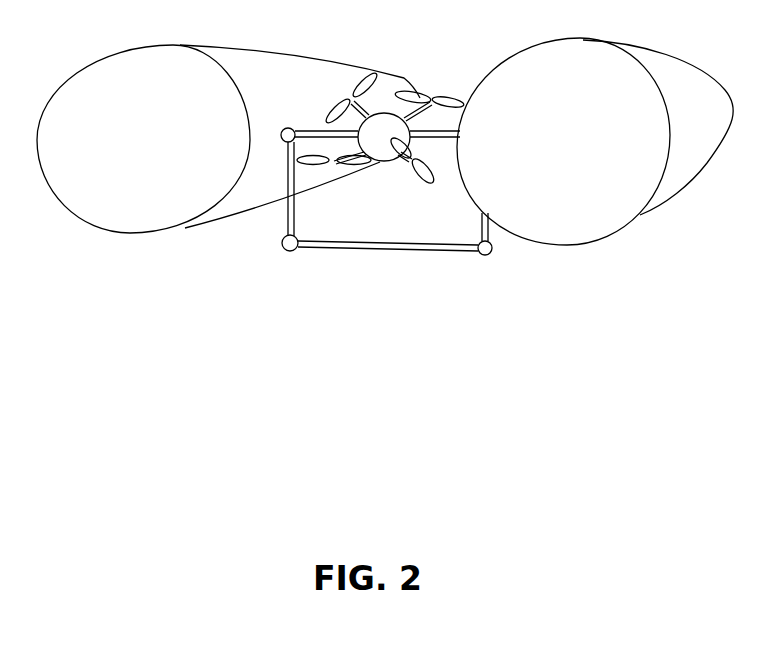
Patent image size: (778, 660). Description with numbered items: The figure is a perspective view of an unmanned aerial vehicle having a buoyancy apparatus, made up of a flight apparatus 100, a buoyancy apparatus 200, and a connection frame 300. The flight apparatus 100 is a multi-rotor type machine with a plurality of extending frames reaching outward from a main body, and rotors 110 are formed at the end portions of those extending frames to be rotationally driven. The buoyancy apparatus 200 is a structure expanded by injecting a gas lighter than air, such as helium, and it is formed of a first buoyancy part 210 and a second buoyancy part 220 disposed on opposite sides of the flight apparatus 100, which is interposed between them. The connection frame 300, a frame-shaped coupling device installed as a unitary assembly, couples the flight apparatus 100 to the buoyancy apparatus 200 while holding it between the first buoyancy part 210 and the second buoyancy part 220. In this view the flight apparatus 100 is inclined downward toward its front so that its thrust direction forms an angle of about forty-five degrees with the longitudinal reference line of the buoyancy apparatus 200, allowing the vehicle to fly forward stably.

The flight apparatus 100 is at (404, 94).
The rotors 110 is at (452, 98).
The buoyancy apparatus 200 is at (385, 243).
The first buoyancy part 210 is at (193, 192).
The second buoyancy part 220 is at (581, 218).
The connection frame 300 is at (395, 250).